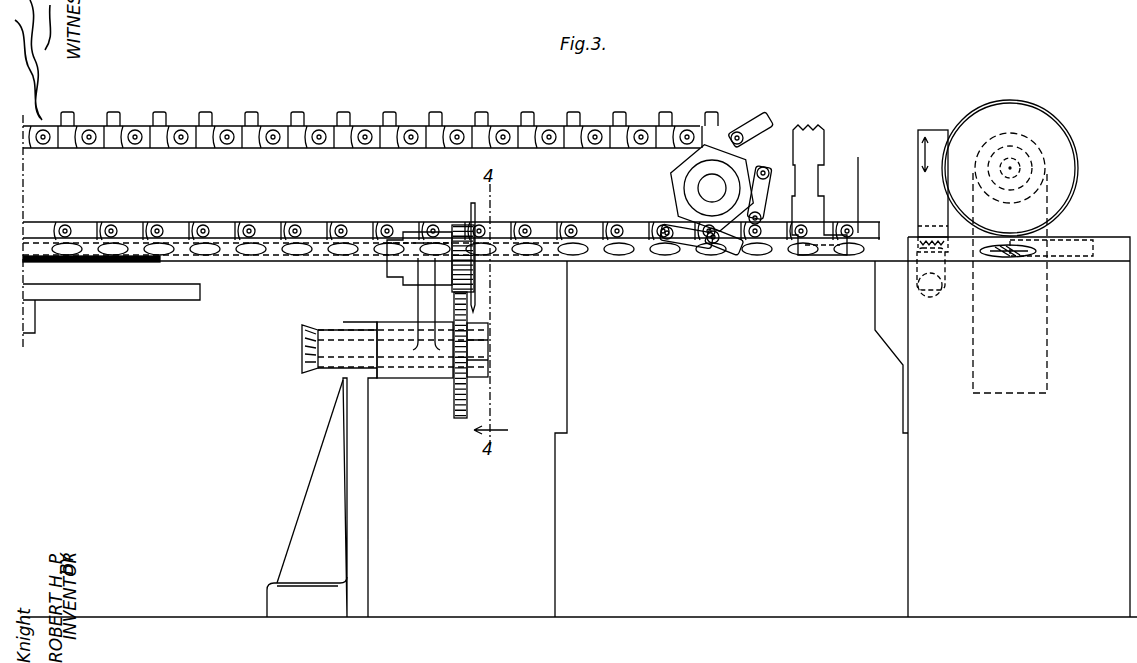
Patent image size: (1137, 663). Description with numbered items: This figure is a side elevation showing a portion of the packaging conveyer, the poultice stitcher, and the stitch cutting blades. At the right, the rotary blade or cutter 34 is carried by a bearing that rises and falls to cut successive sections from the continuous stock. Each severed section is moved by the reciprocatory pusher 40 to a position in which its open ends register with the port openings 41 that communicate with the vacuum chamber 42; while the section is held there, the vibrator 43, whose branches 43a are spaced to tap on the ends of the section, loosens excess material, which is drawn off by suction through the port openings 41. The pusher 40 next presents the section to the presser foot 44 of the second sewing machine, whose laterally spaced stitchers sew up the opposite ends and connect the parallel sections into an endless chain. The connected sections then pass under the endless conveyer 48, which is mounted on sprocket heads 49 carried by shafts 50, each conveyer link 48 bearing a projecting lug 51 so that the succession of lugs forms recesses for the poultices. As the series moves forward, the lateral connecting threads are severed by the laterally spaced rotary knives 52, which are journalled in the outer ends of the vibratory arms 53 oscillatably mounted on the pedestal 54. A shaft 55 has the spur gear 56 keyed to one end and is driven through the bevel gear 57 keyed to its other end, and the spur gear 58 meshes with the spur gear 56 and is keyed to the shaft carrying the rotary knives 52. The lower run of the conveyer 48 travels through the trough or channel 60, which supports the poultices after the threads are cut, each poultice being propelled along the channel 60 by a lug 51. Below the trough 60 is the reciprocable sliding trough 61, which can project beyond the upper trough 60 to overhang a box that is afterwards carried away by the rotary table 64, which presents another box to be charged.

The rotary blade or cutter 34 is at (1058, 142).
The reciprocatory pusher 40 is at (1086, 240).
The port openings 41 is at (924, 262).
The vacuum chamber 42 is at (945, 285).
The vibrator 43 is at (933, 138).
The branches 43a is at (918, 228).
The presser foot 44 is at (830, 245).
The endless conveyer 48 is at (221, 127).
The sprocket heads 49 is at (720, 158).
The shafts 50 is at (712, 188).
The projecting lug 51 is at (110, 125).
The rotary knives 52 is at (474, 291).
The vibratory arms 53 is at (418, 298).
The pedestal 54 is at (368, 546).
The shaft 55 is at (411, 358).
The spur gear 56 is at (458, 419).
The bevel gear 57 is at (306, 361).
The spur gear 58 is at (457, 231).
The trough or channel 60 is at (306, 259).
The sliding trough 61 is at (50, 258).
The rotary table 64 is at (143, 300).